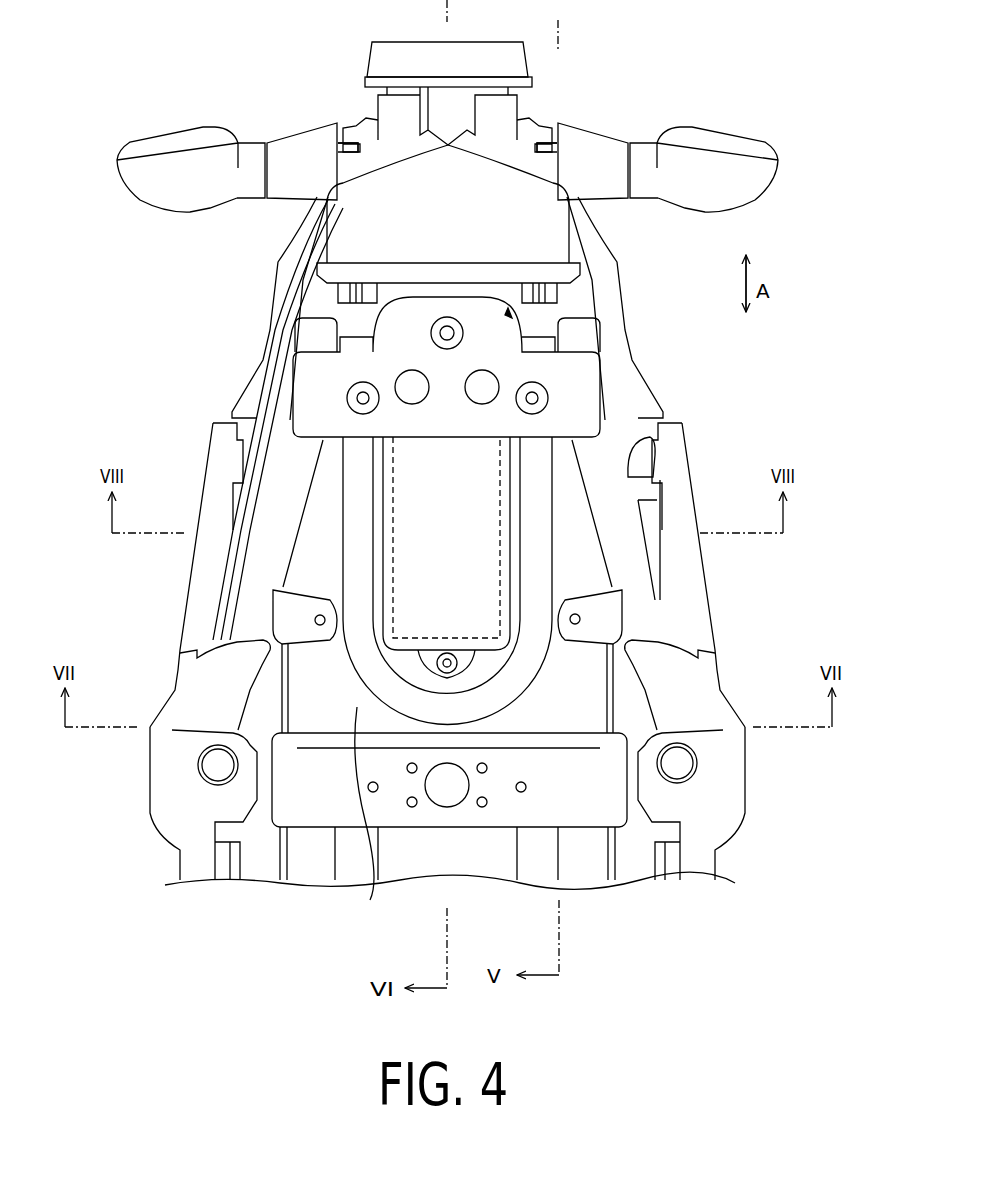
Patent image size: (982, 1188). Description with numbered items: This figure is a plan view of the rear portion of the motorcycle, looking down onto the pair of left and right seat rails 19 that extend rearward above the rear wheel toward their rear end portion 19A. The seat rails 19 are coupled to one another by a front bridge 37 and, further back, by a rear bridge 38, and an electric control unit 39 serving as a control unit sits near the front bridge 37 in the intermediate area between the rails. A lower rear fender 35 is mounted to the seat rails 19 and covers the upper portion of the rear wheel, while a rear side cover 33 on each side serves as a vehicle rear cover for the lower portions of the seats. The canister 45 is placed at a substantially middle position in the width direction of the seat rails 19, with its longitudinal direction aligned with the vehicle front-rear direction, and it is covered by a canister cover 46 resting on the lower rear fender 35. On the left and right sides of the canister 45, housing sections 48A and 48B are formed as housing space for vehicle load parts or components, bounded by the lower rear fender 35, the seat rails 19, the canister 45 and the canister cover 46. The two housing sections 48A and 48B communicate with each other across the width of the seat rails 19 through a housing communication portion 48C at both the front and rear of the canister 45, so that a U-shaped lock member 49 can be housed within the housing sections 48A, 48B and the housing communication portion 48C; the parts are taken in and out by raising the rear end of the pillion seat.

The seat rail 19 is at (268, 590).
The rear end portion of the seat rails 19A is at (300, 290).
The rear side cover 33 is at (178, 820).
The lower rear fender 35 is at (325, 687).
The front bridge 37 is at (323, 810).
The rear bridge 38 is at (318, 407).
The electric control unit (ECU) 39 is at (543, 858).
The canister 45 is at (500, 457).
The canister cover 46 is at (510, 490).
The housing section 48A is at (330, 576).
The housing section 48B is at (562, 557).
The housing communication portion 48C is at (508, 312).
The U-shaped lock member 49 is at (497, 693).